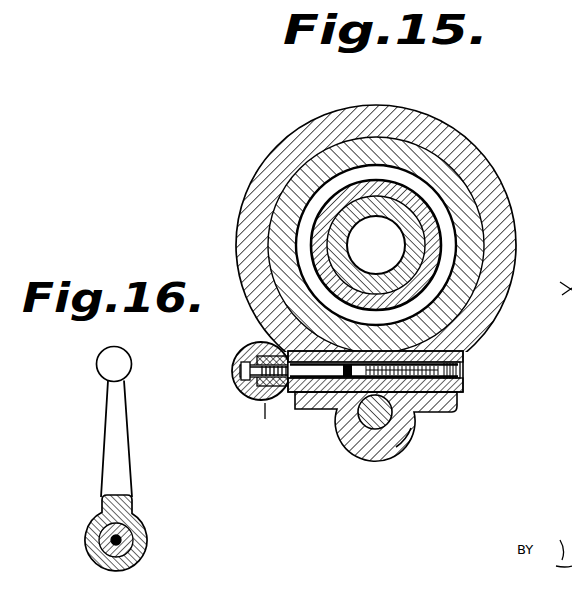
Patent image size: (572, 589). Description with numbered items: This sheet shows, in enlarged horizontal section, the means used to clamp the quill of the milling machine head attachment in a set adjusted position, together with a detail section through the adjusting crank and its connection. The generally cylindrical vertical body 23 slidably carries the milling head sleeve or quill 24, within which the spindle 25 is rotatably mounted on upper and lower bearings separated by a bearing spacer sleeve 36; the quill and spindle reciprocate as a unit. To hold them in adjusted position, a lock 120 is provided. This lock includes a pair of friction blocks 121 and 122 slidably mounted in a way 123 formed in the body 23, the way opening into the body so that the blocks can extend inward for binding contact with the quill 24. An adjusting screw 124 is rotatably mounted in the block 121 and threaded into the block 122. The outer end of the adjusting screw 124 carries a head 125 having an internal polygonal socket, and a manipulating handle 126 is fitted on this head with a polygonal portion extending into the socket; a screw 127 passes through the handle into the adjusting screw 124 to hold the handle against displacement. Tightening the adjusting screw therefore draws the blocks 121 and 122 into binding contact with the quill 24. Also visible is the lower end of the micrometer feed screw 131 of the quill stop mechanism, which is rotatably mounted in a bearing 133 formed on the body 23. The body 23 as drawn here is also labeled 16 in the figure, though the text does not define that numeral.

In FIG. 15, the frame body 16 is at (256, 334).
In FIG. 15, the vertical body 23 is at (501, 210).
In FIG. 15, the milling head sleeve or quill 24 is at (459, 192).
In FIG. 15, the spindle 25 is at (408, 220).
In FIG. 15, the bearing spacer sleeve 36 is at (403, 184).
In FIG. 15, the lock 120 is at (433, 387).
In FIG. 15, the friction block 121 is at (295, 396).
In FIG. 15, the friction block 122 is at (465, 357).
In FIG. 15, the way 123 is at (462, 352).
In FIG. 15, the adjusting screw 124 is at (328, 410).
In FIG. 15, the head 125 is at (263, 397).
In FIG. 16, the head 125 is at (147, 542).
In FIG. 15, the manipulating handle 126 is at (246, 355).
In FIG. 16, the manipulating handle 126 is at (110, 463).
In FIG. 15, the screw 127 is at (243, 379).
In FIG. 16, the screw 127 is at (130, 538).
In FIG. 15, the micrometer feed screw 131 is at (376, 426).
In FIG. 15, the bearing 133 is at (404, 436).